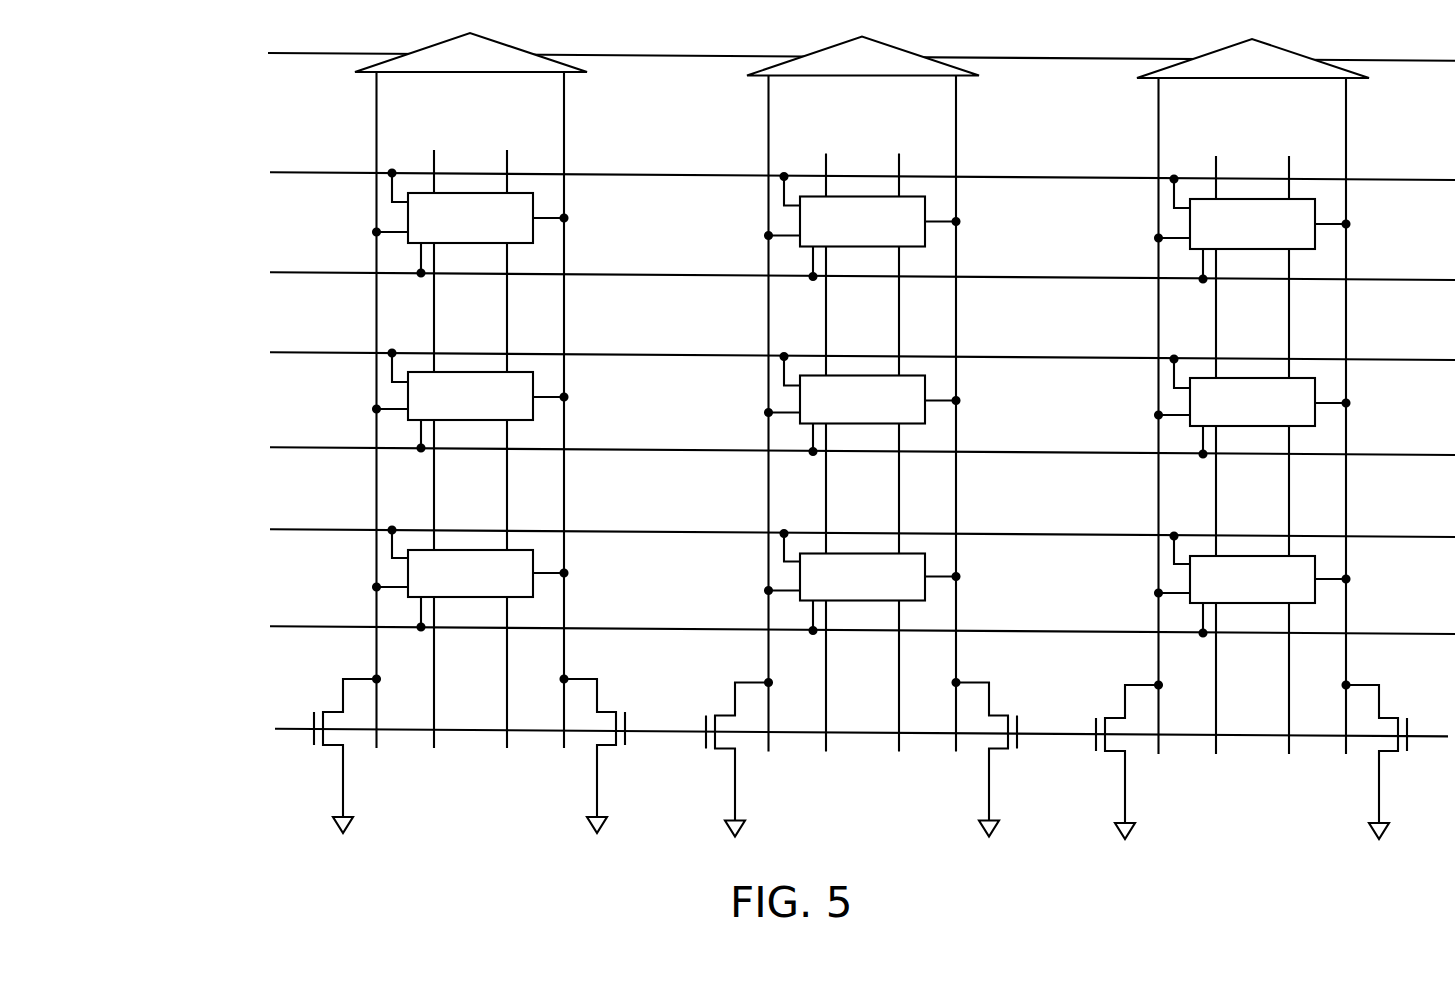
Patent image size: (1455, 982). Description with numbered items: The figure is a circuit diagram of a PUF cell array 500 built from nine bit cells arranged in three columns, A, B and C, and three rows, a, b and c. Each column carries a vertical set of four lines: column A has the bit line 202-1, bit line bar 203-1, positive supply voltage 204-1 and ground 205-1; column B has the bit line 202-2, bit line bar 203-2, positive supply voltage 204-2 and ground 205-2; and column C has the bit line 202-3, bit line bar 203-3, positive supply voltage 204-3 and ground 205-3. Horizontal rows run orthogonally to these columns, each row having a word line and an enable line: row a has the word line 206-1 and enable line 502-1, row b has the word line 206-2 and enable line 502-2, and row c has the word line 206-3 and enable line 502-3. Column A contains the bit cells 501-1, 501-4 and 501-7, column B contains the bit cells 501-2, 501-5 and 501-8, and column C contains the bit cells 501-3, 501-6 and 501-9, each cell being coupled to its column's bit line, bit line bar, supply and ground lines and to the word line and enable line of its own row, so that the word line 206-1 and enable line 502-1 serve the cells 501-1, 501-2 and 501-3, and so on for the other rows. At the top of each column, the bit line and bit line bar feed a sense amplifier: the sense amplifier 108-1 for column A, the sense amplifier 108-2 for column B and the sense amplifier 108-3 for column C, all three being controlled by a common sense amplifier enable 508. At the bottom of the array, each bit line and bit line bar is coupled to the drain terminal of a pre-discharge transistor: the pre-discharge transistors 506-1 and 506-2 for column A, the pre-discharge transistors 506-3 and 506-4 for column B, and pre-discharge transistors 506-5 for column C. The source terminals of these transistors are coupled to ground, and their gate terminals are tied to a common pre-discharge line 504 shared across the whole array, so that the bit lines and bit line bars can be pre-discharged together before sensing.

The PUF cell array 500 is at (170, 53).
The sense amplifier enable (SAEN) 508 is at (841, 53).
The sense amplifier 108-1 is at (471, 52).
The sense amplifier 108-2 is at (863, 56).
The sense amplifier 108-3 is at (1253, 58).
The bit line (BL) 202-1 is at (380, 98).
The bit line bar (BLB) 203-1 is at (558, 98).
The positive supply voltage power (VDD) 204-1 is at (434, 434).
The zero reference voltage (GND) 205-1 is at (509, 434).
The bit line (BL) 202-2 is at (812, 414).
The bit line bar (BLB) 203-2 is at (914, 414).
The positive supply voltage power (VDD) 204-2 is at (826, 438).
The zero reference voltage (GND) 205-2 is at (901, 438).
The bit line (BL) 202-3 is at (1202, 416).
The bit line bar (BLB) 203-3 is at (1304, 416).
The positive supply voltage power (VDD) 204-3 is at (1216, 440).
The zero reference voltage (GND) 205-3 is at (1291, 440).
The enable line (EN) 502-1 is at (830, 174).
The enable line (EN) 502-2 is at (830, 353).
The enable line (EN) 502-3 is at (830, 530).
The word line (WL) 206-1 is at (830, 274).
The word line (WL) 206-2 is at (830, 448).
The word line (WL) 206-3 is at (830, 628).
The bit cell 501-1 is at (441, 232).
The bit cell 501-2 is at (862, 226).
The bit cell 501-3 is at (1252, 229).
The bit cell 501-4 is at (441, 411).
The bit cell 501-5 is at (862, 404).
The bit cell 501-6 is at (1252, 407).
The bit cell 501-7 is at (441, 589).
The bit cell 501-8 is at (862, 582).
The bit cell 501-9 is at (1252, 585).
The common pre-discharge line 504 is at (838, 730).
The pre-discharge transistor 506-1 is at (347, 731).
The pre-discharge transistor 506-2 is at (592, 731).
The pre-discharge transistor 506-3 is at (743, 758).
The pre-discharge transistor 506-4 is at (982, 758).
The pre-discharge transistor 506-5 is at (1252, 761).